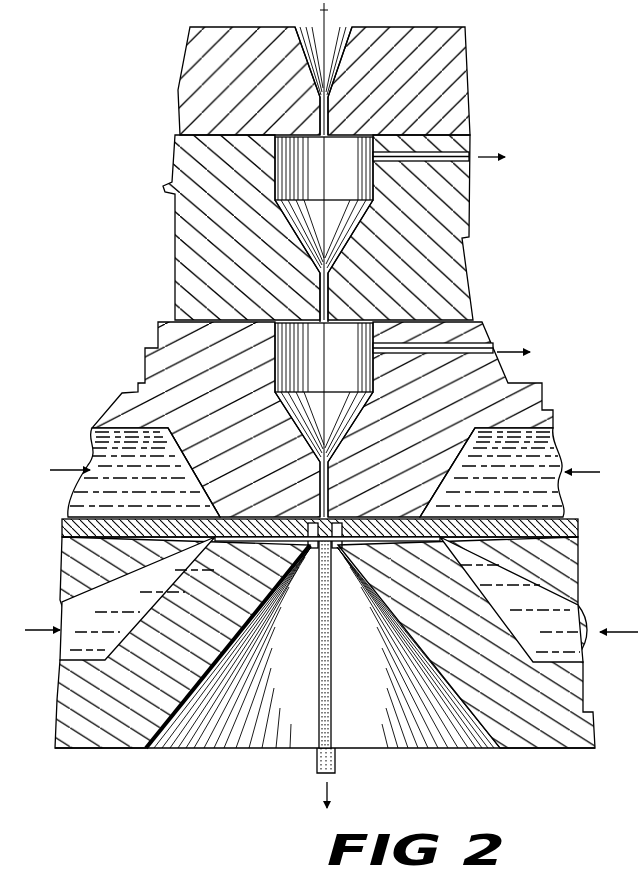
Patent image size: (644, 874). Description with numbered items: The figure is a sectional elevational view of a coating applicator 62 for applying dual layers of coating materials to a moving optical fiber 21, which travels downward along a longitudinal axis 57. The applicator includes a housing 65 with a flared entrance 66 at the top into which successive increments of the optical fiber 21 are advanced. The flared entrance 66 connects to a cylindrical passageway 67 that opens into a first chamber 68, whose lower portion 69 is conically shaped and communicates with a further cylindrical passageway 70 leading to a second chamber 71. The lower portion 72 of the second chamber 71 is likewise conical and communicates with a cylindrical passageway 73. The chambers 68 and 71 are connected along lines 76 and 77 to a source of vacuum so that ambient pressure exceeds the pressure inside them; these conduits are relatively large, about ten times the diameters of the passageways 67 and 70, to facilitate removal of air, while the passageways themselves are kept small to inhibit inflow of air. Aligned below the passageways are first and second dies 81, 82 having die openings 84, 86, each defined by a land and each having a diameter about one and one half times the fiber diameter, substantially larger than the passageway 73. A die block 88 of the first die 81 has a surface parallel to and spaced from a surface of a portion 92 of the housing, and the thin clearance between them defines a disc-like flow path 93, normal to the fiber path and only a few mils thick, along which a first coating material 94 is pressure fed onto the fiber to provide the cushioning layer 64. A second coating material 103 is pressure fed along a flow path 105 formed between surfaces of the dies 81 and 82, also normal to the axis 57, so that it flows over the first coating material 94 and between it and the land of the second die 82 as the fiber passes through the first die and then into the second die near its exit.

The optical fiber 21 is at (328, 24).
The axis 57 is at (331, 212).
The coating applicator 62 is at (487, 273).
The cushioning layer 64 is at (168, 864).
The housing 65 is at (458, 210).
The flared entrance 66 is at (307, 25).
The cylindrical passageway 67 is at (331, 118).
The first chamber 68 is at (275, 175).
The lower portion of first chamber 69 is at (305, 226).
The cylindrical passageway 70 is at (330, 307).
The second chamber 71 is at (274, 353).
The lower portion of second chamber 72 is at (343, 421).
The cylindrical passageway 73 is at (318, 478).
The line 76 is at (470, 158).
The line 77 is at (478, 342).
The first die 81 is at (226, 498).
The second die 82 is at (200, 575).
The die opening 84 is at (335, 512).
The die opening 86 is at (336, 572).
The die block 88 is at (573, 563).
The portion of the housing 92 is at (413, 492).
The flow path 93 is at (228, 524).
The first coating material 94 is at (92, 462).
The second coating material 103 is at (64, 612).
The flow path 105 is at (368, 546).